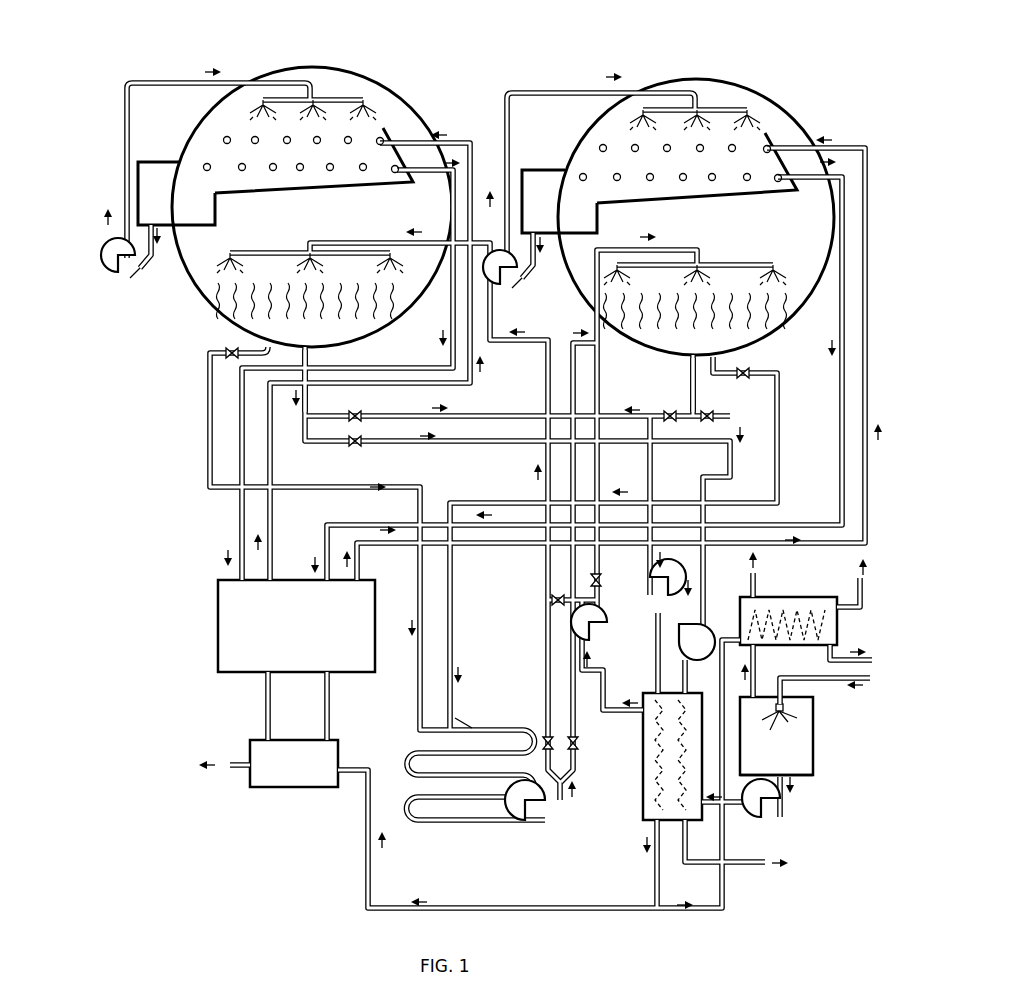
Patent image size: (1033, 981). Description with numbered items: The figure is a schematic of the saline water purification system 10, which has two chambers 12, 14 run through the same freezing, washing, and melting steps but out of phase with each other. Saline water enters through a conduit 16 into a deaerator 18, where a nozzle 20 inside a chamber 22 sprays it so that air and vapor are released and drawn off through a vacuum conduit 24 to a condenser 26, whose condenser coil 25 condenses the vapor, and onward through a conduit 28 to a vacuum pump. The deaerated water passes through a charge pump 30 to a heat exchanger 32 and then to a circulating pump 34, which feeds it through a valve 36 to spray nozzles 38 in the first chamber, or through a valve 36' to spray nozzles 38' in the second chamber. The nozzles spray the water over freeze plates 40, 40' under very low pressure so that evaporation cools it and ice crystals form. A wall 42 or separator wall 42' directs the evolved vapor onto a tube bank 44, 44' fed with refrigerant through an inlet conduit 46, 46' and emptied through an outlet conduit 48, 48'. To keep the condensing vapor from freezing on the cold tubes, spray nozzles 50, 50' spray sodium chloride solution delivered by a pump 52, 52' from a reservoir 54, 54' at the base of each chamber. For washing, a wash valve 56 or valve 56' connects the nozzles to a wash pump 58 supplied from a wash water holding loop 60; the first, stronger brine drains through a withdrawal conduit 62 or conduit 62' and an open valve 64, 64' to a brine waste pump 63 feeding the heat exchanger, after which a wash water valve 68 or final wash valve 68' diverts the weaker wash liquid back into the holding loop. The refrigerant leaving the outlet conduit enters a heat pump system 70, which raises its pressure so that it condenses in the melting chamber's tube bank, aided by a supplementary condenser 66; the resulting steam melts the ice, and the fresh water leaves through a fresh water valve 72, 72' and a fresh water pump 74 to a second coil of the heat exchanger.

The system 10 is at (433, 60).
The chamber 12 is at (300, 67).
The chamber 14 is at (673, 80).
The conduit 16 is at (818, 690).
The deaerator 18 is at (813, 750).
The nozzle 20 is at (777, 731).
The chamber 22 is at (812, 773).
The vacuum conduit 24 is at (757, 667).
The condenser coil 25 is at (800, 600).
The condenser 26 is at (840, 635).
The conduit 28 is at (752, 585).
The charge pump 30 is at (792, 822).
The heat exchanger 32 is at (640, 780).
The circulating pump 34 is at (612, 652).
The valve 36 is at (535, 585).
The valve 36' is at (587, 567).
The spray nozzles 38 is at (310, 251).
The spray nozzles 38' is at (695, 259).
The freeze plates 40 is at (305, 312).
The freezer plates 40' is at (695, 321).
The wall 42 is at (314, 173).
The separator wall 42' is at (697, 180).
The tube bank 44 is at (282, 135).
The tube bank 44' is at (661, 144).
The inlet conduit 46 is at (370, 335).
The inlet conduit 46' is at (615, 338).
The outlet conduit 48 is at (347, 375).
The outlet conduit 48' is at (584, 378).
The spray nozzles 50 is at (313, 97).
The nozzles 50' is at (695, 108).
The circulating pump 52 is at (129, 279).
The pump 52' is at (528, 282).
The reservoir 54 is at (176, 176).
The reservoir 54' is at (559, 184).
The wash valve 56 is at (532, 721).
The valve 56' is at (592, 733).
The wash pump 58 is at (555, 832).
The wash water holding loop 60 is at (471, 715).
The withdrawal conduit 62 is at (325, 381).
The conduit 62' is at (664, 385).
The brine waste pump 63 is at (640, 606).
The valve 64 is at (375, 407).
The valve 64' is at (646, 408).
The supplementary condenser 66 is at (292, 782).
The wash water valve 68 is at (208, 335).
The final wash valve 68' is at (770, 361).
The heat pump system 70 is at (345, 670).
The fresh water valve 72 is at (372, 452).
The fresh water valve 72' is at (732, 409).
The fresh water pump 74 is at (697, 655).